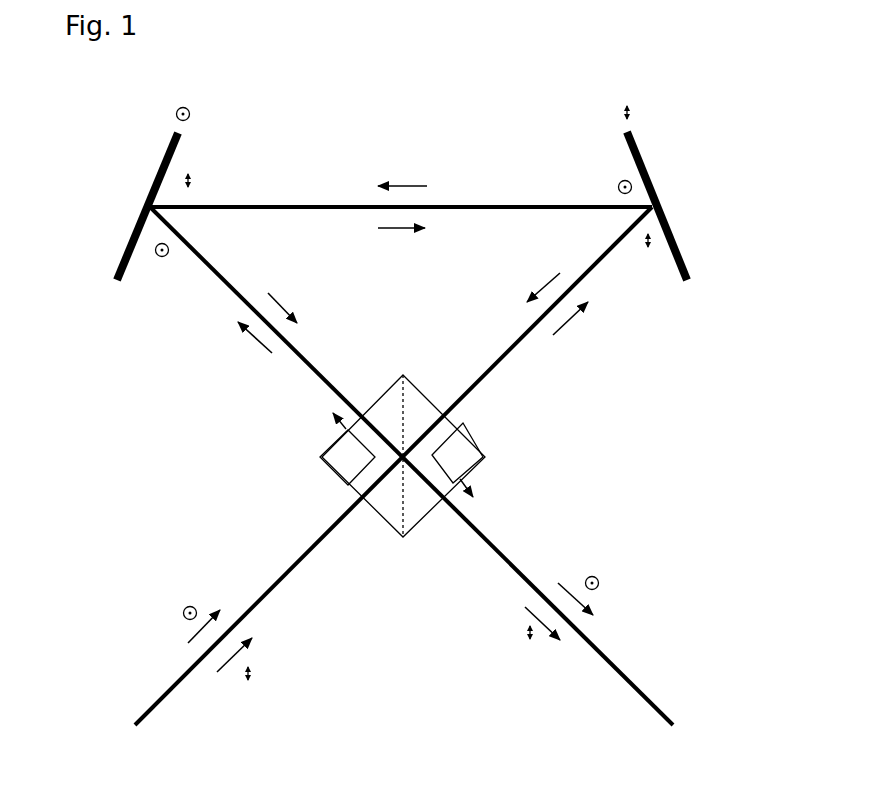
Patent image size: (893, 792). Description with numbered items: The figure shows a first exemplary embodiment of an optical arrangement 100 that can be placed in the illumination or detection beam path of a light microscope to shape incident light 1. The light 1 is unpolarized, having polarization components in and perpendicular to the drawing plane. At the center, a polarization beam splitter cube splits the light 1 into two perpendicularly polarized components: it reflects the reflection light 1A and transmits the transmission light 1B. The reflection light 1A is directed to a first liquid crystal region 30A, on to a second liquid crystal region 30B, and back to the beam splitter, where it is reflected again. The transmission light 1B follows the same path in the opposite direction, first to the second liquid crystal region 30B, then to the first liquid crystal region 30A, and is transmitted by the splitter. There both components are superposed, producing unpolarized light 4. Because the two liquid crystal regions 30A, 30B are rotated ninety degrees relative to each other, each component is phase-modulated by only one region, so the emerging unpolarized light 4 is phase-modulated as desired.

The optical arrangement 100 is at (653, 81).
The first liquid crystal region 30A is at (137, 228).
The second liquid crystal region 30B is at (690, 271).
The reflection light 1A is at (228, 283).
The transmission light 1B is at (493, 373).
The light 1 is at (312, 546).
The unpolarized light 4 is at (648, 695).